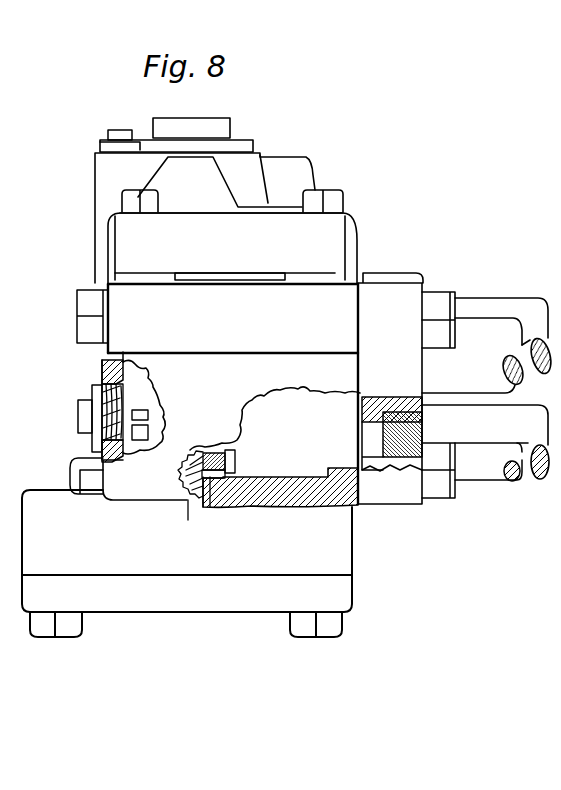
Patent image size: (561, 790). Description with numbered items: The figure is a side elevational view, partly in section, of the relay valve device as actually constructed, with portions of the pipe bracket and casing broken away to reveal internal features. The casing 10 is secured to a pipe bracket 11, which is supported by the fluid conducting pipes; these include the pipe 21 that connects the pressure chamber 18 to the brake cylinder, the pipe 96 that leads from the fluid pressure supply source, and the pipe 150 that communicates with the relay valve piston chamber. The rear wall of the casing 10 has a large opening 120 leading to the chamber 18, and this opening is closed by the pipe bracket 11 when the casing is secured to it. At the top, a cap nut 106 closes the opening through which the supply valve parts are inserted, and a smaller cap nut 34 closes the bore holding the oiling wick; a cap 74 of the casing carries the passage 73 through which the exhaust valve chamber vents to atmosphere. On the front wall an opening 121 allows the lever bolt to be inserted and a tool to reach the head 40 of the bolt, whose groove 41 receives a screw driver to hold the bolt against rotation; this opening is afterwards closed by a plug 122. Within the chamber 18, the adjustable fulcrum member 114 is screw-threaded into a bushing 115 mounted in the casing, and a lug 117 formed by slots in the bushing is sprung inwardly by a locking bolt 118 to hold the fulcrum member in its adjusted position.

The cap nut 106 is at (158, 128).
The cap nut 34 is at (108, 135).
The cap 74 is at (168, 178).
The pipe bracket 11 is at (392, 298).
The pipe 96 is at (478, 302).
The passage 73 is at (493, 323).
The pipe 21 is at (540, 480).
The pipe 150 is at (495, 475).
The casing 10 is at (117, 372).
The opening 121 is at (125, 403).
The plug 122 is at (78, 412).
The head 40 is at (140, 417).
The groove 41 is at (148, 422).
The pressure chamber 18 is at (295, 415).
The fulcrum member 114 is at (190, 492).
The bushing 115 is at (203, 503).
The lug 117 is at (225, 478).
The locking bolt 118 is at (237, 465).
The opening 120 is at (320, 507).